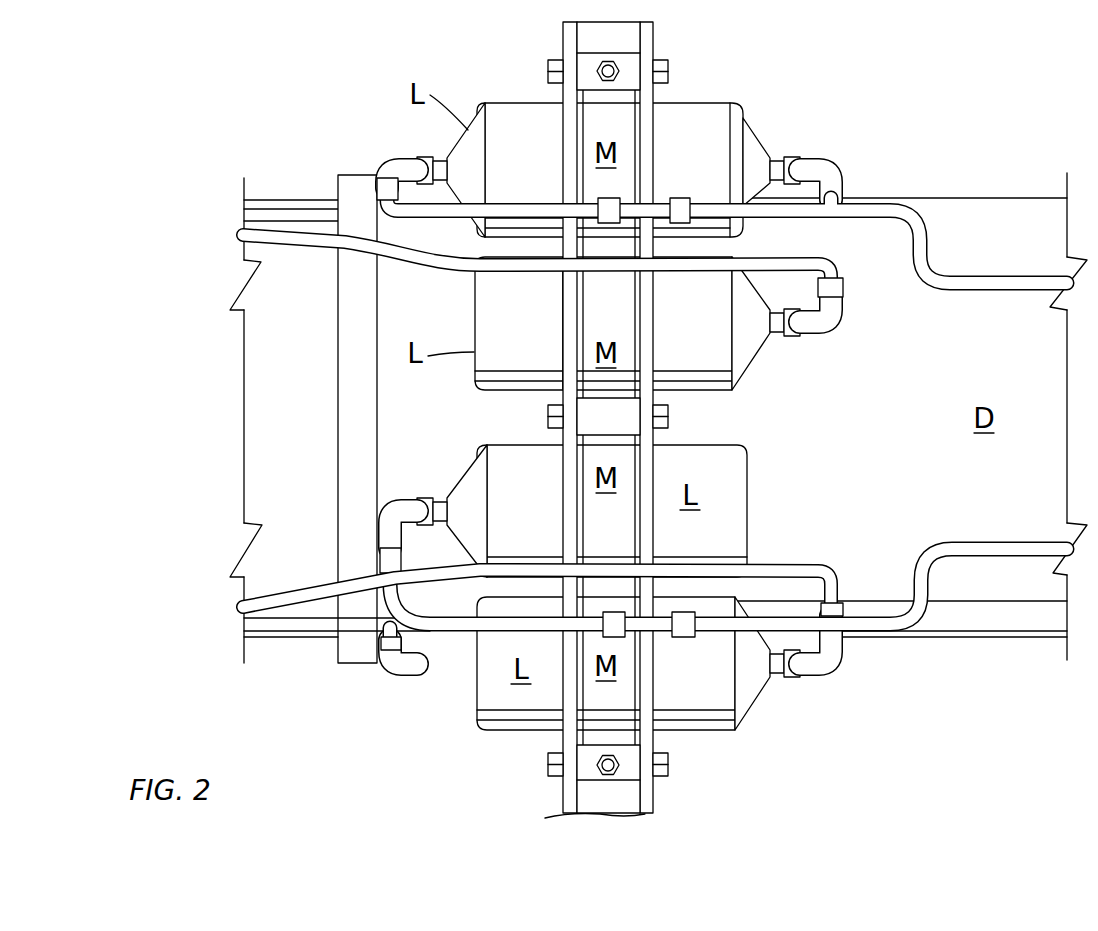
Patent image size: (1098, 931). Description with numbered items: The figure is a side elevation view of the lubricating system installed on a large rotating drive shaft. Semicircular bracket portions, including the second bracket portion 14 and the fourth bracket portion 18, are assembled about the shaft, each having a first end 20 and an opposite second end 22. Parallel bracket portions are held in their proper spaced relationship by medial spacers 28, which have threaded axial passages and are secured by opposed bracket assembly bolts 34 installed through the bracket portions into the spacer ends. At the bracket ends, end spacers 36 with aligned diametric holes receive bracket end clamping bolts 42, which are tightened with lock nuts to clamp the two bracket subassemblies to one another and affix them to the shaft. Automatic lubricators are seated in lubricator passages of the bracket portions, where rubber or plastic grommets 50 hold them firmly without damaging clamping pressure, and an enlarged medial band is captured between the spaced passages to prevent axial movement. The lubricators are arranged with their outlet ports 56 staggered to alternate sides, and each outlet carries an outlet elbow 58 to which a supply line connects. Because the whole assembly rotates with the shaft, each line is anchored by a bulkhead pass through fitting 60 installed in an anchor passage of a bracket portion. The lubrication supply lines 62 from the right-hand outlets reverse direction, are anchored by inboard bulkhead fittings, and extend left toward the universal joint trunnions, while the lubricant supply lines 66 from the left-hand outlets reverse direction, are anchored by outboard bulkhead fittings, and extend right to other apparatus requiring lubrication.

The second bracket portion 14 is at (563, 310).
The fourth bracket portion 18 is at (655, 314).
The first end 20 is at (607, 16).
The second end 22 is at (563, 813).
The medial spacer 28 is at (603, 420).
The bracket assembly bolt 34 is at (548, 71).
The end spacer 36 is at (590, 62).
The bracket end clamping bolt 42 is at (608, 90).
The grommet 50 is at (634, 322).
The outlet port 56 is at (440, 186).
The outlet elbow 58 is at (392, 160).
The bulkhead pass through fitting 60 is at (660, 198).
The lubrication supply line 62 is at (297, 246).
The lubricant supply line 66 is at (392, 216).